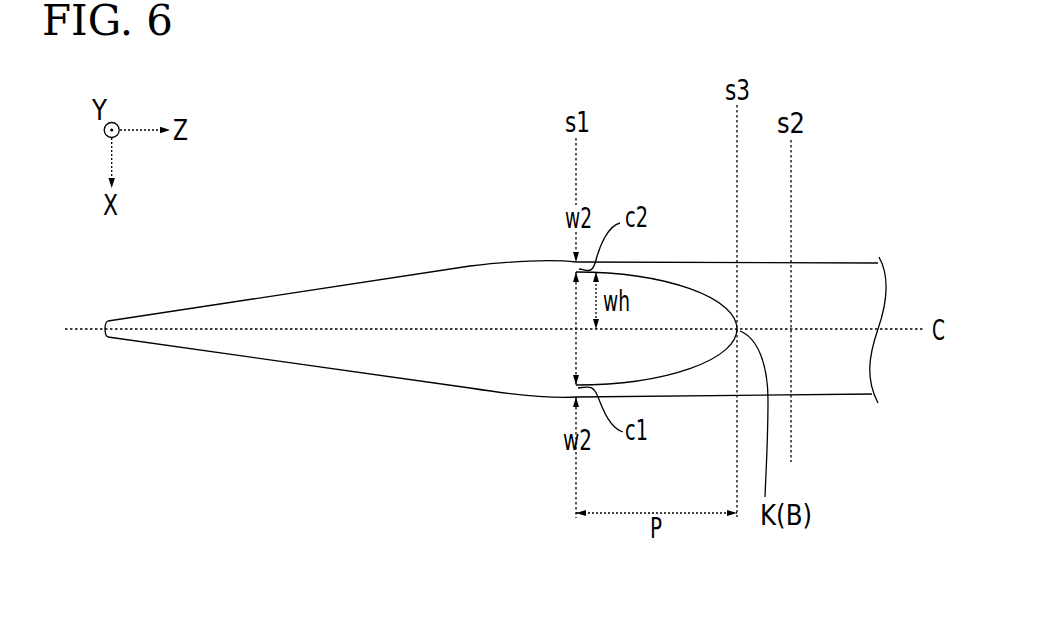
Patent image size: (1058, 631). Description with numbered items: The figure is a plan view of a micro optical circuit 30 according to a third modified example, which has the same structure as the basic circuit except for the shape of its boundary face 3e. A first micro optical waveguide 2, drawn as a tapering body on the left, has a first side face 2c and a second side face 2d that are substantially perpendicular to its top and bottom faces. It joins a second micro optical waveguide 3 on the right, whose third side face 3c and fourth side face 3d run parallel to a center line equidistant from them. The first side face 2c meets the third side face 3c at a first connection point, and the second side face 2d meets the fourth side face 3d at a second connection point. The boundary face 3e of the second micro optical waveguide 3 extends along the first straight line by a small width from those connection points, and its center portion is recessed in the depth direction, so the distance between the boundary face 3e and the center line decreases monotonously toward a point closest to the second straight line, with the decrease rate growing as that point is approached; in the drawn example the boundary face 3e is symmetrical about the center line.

The micro optical circuit 30 is at (878, 142).
The first micro optical waveguide 2 is at (340, 332).
The first side face 2c is at (468, 393).
The second side face 2d is at (412, 275).
The second micro optical waveguide 3 is at (731, 336).
The third side face 3c is at (825, 395).
The fourth side face 3d is at (827, 263).
The boundary face 3e is at (684, 290).